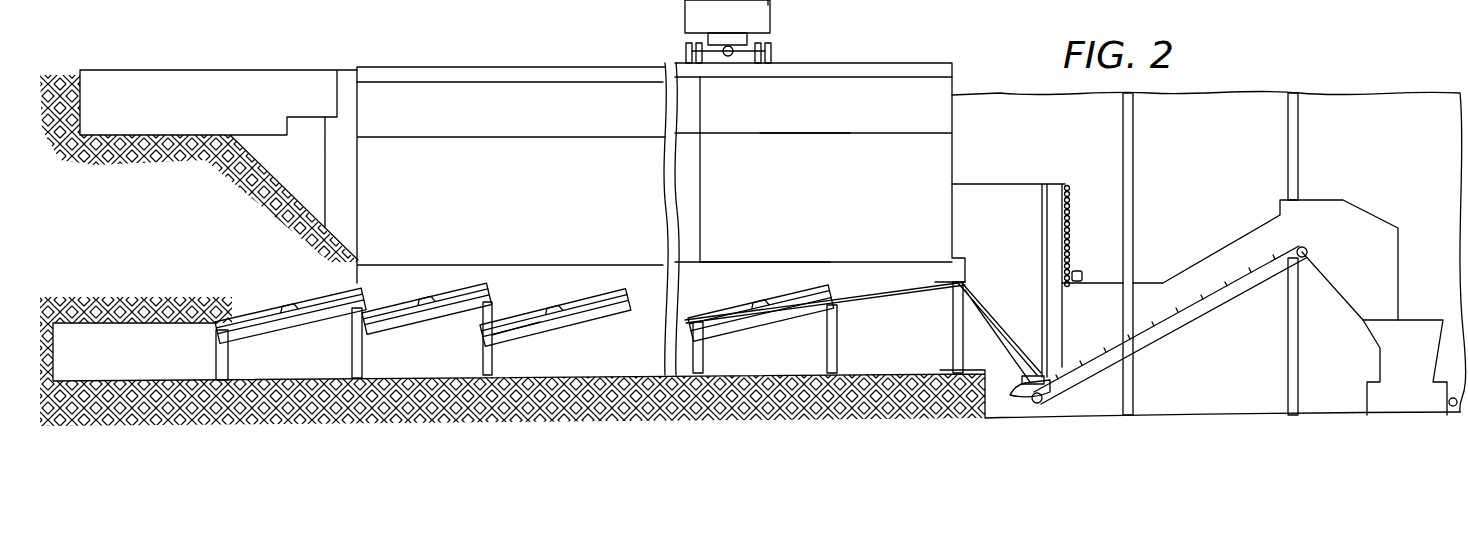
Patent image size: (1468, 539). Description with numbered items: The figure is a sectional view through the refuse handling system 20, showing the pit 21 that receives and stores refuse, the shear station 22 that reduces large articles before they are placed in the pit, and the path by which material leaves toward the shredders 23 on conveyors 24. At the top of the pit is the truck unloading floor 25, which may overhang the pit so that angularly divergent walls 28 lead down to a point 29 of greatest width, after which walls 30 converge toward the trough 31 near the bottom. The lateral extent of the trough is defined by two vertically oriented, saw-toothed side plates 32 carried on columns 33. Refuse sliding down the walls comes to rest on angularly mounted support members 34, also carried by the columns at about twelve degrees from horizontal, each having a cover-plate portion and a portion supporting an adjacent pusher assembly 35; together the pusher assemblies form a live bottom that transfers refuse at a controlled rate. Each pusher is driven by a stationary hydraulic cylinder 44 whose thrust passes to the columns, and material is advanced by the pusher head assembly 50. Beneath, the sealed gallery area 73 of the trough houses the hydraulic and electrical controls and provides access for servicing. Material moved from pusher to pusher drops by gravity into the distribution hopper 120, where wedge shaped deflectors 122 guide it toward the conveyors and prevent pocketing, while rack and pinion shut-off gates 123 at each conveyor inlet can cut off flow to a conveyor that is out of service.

The refuse handling system 20 is at (464, 60).
The pit 21 is at (594, 64).
The shear station 22 is at (245, 68).
The shredders 23 is at (1413, 319).
The conveyors 24 is at (1206, 294).
The truck unloading floor 25 is at (810, 63).
The angularly divergent walls 28 is at (876, 119).
The point of greatest width 29 is at (785, 135).
The converging walls 30 is at (867, 207).
The trough 31 is at (725, 252).
The side plates 32 is at (773, 273).
The columns 33 is at (362, 361).
The support members 34 is at (587, 280).
The pusher assemblies 35 is at (500, 289).
The hydraulic cylinder 44 is at (514, 330).
The pusher head assembly 50 is at (851, 296).
The gallery area 73 is at (602, 364).
The distribution hopper 120 is at (1034, 211).
The wedge shaped deflectors 122 is at (1046, 312).
The rack and pinion shut-off gates 123 is at (1069, 230).